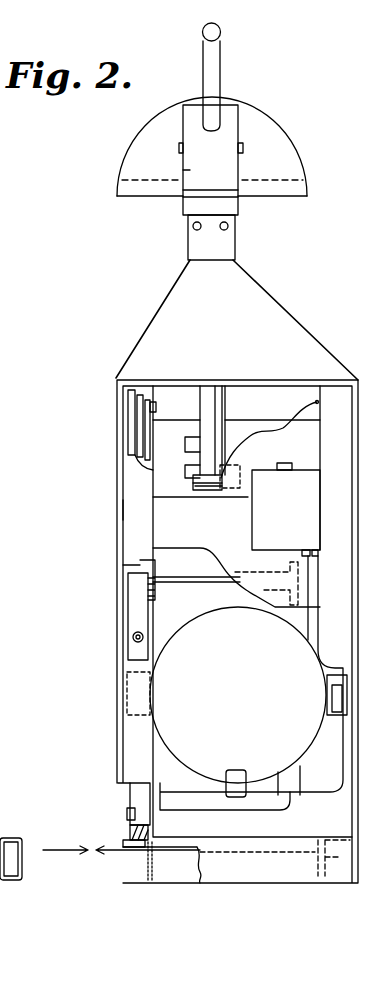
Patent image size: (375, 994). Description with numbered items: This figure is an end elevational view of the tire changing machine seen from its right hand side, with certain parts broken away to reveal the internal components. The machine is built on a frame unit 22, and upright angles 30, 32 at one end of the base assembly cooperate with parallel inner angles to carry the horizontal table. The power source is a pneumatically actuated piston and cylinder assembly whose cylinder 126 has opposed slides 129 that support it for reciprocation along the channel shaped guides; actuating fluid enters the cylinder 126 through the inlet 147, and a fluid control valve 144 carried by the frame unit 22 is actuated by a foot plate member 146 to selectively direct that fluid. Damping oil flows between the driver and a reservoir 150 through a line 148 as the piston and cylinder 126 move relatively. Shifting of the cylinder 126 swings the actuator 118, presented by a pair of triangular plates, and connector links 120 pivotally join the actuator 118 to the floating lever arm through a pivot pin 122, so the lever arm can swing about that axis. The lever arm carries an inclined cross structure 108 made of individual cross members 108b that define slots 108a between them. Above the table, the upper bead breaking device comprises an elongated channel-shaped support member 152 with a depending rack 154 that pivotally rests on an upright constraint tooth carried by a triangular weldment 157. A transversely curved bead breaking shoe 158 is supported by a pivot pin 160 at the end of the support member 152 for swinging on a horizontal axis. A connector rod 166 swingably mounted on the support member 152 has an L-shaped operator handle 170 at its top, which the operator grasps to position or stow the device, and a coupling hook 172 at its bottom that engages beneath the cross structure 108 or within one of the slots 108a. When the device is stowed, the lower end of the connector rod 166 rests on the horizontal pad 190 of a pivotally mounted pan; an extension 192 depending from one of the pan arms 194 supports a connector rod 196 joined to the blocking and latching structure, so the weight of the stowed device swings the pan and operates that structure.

The frame unit 22 is at (111, 838).
The upright angle 30 is at (335, 378).
The upright angle 32 is at (130, 508).
The inclined cross structure 108 is at (176, 460).
The slot 108a is at (258, 445).
The cross member 108b is at (233, 430).
The actuator 118 is at (128, 415).
The connector link 120 is at (139, 437).
The pivot pin 122 is at (143, 405).
The cylinder 126 is at (175, 735).
The slide 129 is at (325, 705).
The fluid control valve 144 is at (135, 792).
The foot plate member 146 is at (72, 855).
The inlet 147 is at (238, 797).
The line 148 is at (312, 618).
The reservoir 150 is at (272, 520).
The support member 152 is at (183, 170).
The rack 154 is at (226, 231).
The weldment 157 is at (282, 322).
The bead breaking shoe 158 is at (246, 109).
The pivot pin 160 is at (243, 148).
The connector rod 166 is at (196, 387).
The operator handle 170 is at (222, 50).
The coupling hook 172 is at (212, 490).
The horizontal pad 190 is at (174, 584).
The extension 192 is at (140, 612).
The arm 194 is at (150, 583).
The connector rod 196 is at (133, 640).